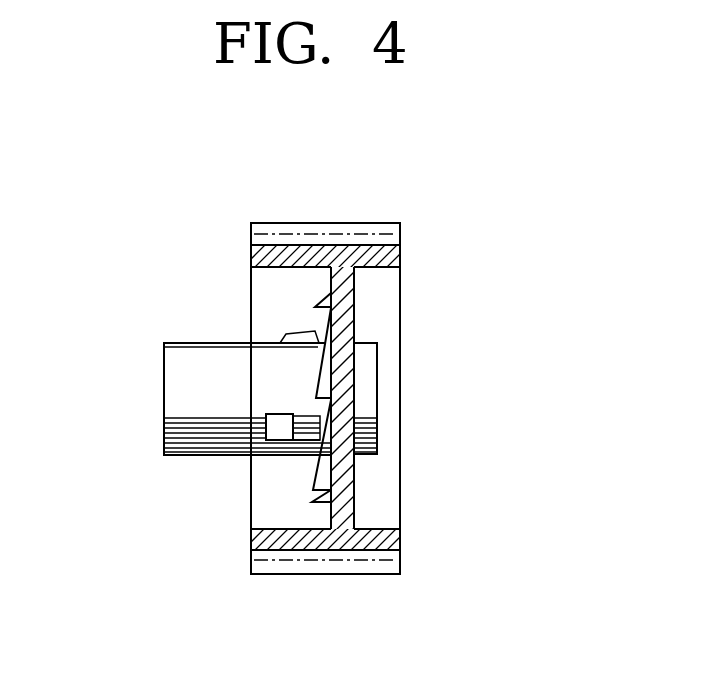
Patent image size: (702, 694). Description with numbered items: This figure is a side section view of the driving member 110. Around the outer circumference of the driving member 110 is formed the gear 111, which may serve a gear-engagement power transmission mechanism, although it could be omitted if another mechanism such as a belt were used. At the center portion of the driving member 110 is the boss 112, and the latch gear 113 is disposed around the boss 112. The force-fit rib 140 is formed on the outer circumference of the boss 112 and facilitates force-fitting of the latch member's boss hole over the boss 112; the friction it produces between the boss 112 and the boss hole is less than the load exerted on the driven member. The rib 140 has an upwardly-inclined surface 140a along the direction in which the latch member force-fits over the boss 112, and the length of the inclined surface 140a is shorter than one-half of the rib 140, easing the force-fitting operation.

The driving member 110 is at (490, 163).
The gear 111 is at (293, 231).
The boss 112 is at (188, 349).
The latch gear 113 is at (327, 385).
The force-fit rib 140 is at (281, 447).
The inclined surface 140a is at (277, 415).